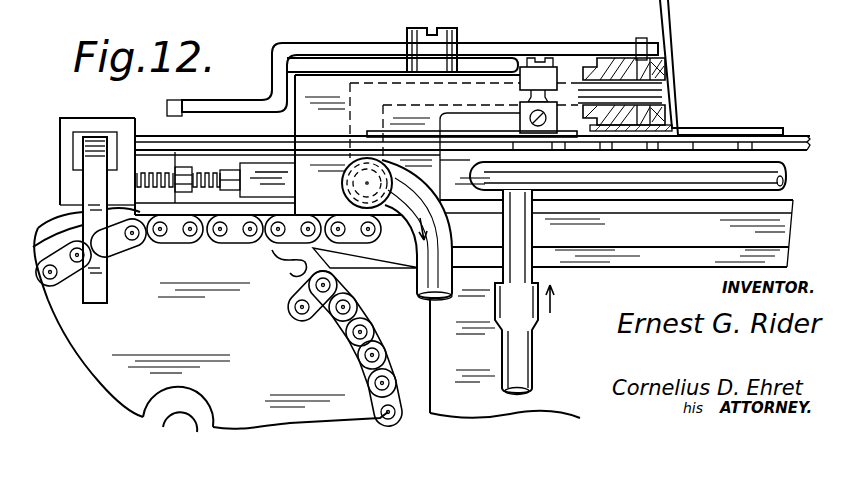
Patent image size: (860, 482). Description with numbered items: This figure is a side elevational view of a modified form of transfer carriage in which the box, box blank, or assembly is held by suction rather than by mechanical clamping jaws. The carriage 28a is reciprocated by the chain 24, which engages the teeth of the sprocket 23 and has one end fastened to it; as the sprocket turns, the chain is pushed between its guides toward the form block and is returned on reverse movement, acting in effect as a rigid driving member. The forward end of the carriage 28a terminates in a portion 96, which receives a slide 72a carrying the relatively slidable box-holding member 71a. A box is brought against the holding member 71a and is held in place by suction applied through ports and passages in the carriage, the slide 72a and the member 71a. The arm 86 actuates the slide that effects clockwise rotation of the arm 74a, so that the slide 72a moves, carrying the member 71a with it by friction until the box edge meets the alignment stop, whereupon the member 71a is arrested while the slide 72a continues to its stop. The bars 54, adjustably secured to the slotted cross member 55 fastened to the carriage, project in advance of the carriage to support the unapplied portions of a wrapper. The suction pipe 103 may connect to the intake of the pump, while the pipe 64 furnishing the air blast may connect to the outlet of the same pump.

The arm 86 is at (83, 152).
The carriage 28a is at (322, 100).
The arm 74a is at (477, 47).
The portion 96 is at (598, 67).
The slotted cross member 55 is at (518, 78).
The bar 54 is at (462, 132).
The slide 72a is at (650, 72).
The box-holding member 71a is at (667, 113).
The chain 24 is at (115, 245).
The sprocket 23 is at (333, 357).
The suction pipe 103 is at (422, 276).
The pipe 64 is at (522, 338).